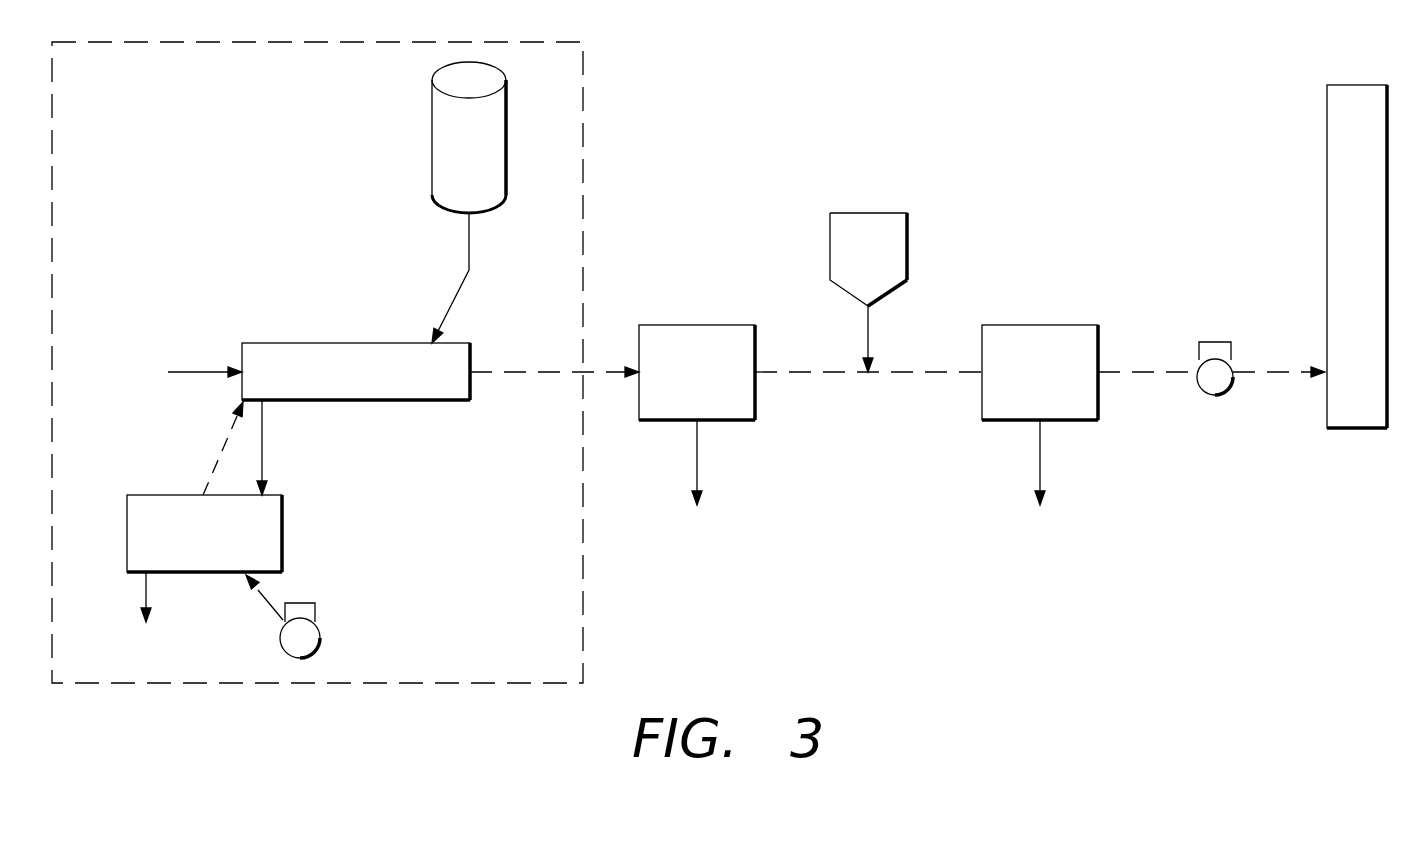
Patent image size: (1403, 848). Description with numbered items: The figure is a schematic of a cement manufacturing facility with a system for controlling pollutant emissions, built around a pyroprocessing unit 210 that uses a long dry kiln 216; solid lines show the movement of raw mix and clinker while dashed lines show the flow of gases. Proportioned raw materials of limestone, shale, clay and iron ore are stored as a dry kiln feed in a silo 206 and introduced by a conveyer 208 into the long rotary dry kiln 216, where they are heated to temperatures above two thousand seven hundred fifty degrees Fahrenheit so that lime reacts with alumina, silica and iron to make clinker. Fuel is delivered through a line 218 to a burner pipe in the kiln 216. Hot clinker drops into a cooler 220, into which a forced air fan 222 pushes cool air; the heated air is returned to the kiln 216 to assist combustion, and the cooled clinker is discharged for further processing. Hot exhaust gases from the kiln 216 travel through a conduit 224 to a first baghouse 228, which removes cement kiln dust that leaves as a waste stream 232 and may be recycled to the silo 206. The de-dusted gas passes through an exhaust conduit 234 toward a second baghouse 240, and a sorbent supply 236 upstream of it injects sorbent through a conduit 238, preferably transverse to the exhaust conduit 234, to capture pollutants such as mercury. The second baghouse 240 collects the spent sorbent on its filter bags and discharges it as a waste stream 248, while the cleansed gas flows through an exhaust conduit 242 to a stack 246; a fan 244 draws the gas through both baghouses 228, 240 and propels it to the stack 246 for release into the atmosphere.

The silo 206 is at (451, 162).
The conveyer 208 is at (469, 250).
The pyroprocessing unit 210 is at (317, 362).
The long dry kiln 216 is at (334, 382).
The fuel line 218 is at (195, 366).
The cooler 220 is at (182, 541).
The forced air fan 222 is at (305, 640).
The conduit 224 is at (527, 374).
The first baghouse 228 is at (675, 384).
The waste stream 232 is at (723, 464).
The exhaust conduit 234 is at (803, 375).
The sorbent supply 236 is at (850, 259).
The conduit 238 is at (868, 335).
The second baghouse 240 is at (1018, 384).
The exhaust conduit 242 is at (1145, 375).
The fan 244 is at (1212, 350).
The stack 246 is at (1339, 262).
The waste stream 248 is at (1066, 465).